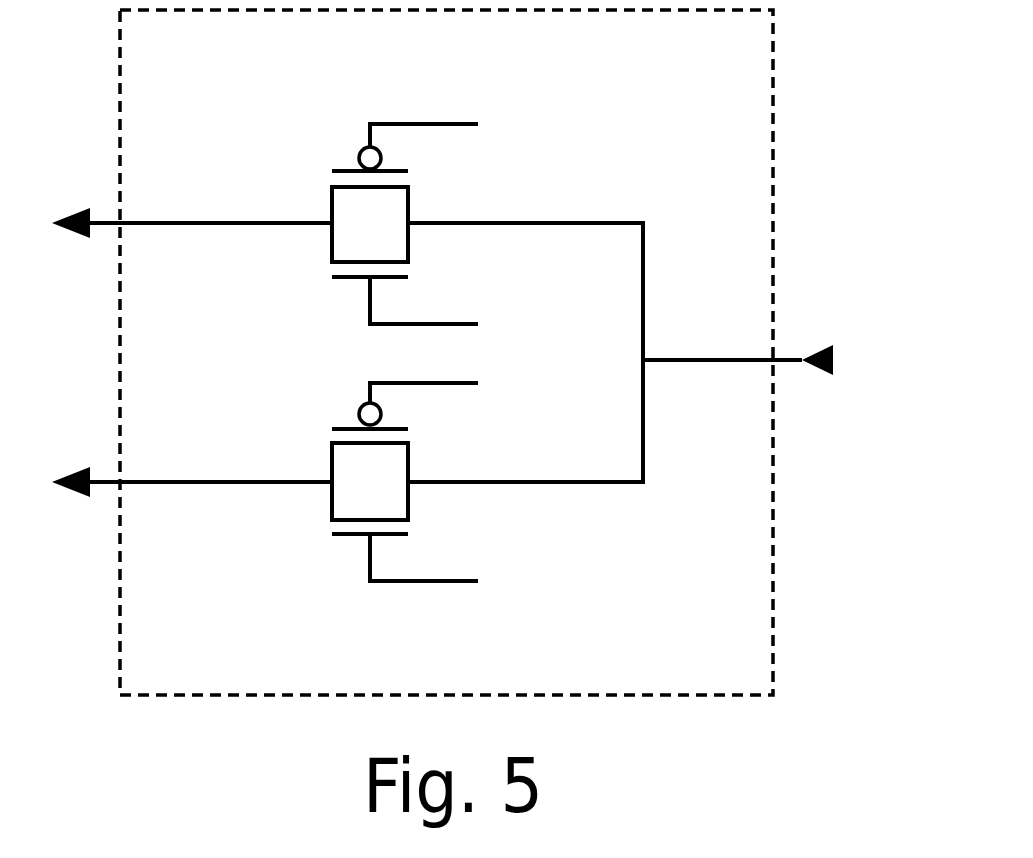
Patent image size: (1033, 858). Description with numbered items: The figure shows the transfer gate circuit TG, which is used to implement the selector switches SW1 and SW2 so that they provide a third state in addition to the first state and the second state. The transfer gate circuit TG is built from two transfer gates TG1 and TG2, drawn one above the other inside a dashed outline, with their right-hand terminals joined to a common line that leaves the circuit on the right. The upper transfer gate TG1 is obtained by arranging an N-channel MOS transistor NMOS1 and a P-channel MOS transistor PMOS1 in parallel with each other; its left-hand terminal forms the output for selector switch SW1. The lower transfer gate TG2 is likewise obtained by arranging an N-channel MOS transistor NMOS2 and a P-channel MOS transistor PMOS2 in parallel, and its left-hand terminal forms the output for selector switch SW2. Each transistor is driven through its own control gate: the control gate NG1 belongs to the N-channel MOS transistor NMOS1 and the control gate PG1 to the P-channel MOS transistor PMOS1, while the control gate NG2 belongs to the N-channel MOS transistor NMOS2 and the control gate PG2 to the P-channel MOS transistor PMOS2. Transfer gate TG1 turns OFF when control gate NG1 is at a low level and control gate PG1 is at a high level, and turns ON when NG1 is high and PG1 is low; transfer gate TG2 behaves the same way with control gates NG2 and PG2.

The transfer gate circuit TG is at (773, 137).
The transfer gate TG1 is at (390, 175).
The transfer gate TG2 is at (391, 512).
The P-channel MOS transistor PMOS1 is at (325, 180).
The N-channel MOS transistor NMOS1 is at (418, 275).
The P-channel MOS transistor PMOS2 is at (327, 435).
The N-channel MOS transistor NMOS2 is at (328, 520).
The control gate PG1 is at (437, 123).
The control gate NG1 is at (365, 293).
The control gate PG2 is at (440, 383).
The control gate NG2 is at (387, 583).
The selector switch SW1 is at (192, 203).
The selector switch SW2 is at (192, 462).